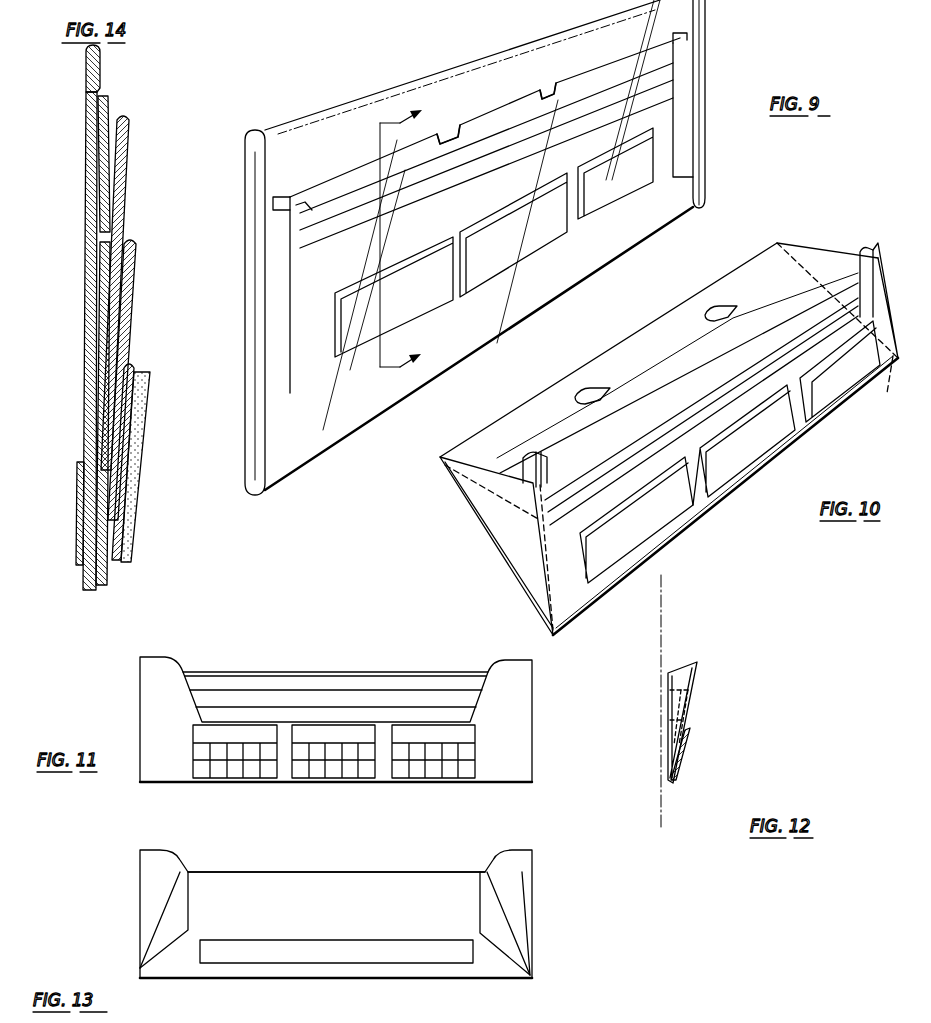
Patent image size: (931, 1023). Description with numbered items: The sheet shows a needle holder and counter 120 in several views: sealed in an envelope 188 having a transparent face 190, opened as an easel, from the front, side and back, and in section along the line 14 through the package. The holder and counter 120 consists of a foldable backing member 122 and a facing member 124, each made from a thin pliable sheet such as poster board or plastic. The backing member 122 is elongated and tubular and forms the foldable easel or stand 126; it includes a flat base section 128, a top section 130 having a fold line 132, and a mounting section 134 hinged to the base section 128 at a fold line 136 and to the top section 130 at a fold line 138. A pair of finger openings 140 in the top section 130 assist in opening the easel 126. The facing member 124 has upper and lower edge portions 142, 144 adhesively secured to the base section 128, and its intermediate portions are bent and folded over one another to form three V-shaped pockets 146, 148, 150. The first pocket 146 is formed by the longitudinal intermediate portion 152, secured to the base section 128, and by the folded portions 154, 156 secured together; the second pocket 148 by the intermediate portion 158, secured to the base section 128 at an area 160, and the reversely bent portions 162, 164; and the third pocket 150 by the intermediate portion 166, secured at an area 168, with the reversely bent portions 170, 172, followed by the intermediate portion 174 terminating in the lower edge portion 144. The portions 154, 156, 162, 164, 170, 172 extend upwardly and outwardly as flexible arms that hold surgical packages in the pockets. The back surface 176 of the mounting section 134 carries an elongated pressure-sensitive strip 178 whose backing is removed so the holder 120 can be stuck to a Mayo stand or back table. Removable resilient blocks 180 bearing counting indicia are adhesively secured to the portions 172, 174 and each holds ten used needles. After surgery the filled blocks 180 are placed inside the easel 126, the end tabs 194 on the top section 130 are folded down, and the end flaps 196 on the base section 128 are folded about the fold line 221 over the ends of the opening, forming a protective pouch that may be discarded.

In FIG. 9, the section line 14— 14 is at (413, 231).
In FIG. 14, the holder and counter 120 is at (148, 512).
In FIG. 9, the holder and counter 120 is at (625, 207).
In FIG. 10, the holder and counter 120 is at (755, 495).
In FIG. 11, the holder and counter 120 is at (336, 719).
In FIG. 13, the holder and counter 120 is at (336, 914).
In FIG. 14, the backing member 122 is at (80, 203).
In FIG. 10, the backing member 122 is at (478, 542).
In FIG. 14, the facing member 124 is at (114, 106).
In FIG. 10, the foldable easel or stand 126 is at (513, 580).
In FIG. 14, the base section 128 is at (98, 345).
In FIG. 10, the base section 128 is at (560, 613).
In FIG. 14, the top section 130 is at (88, 68).
In FIG. 10, the top section 130 is at (510, 420).
In FIG. 14, the fold line 132 is at (101, 50).
In FIG. 9, the fold line 132 is at (612, 64).
In FIG. 10, the fold line 132 is at (657, 350).
In FIG. 14, the mounting section 134 is at (111, 405).
In FIG. 10, the mounting section 134 is at (462, 496).
In FIG. 10, the fold line 136 is at (553, 632).
In FIG. 10, the fold line 138 is at (440, 462).
In FIG. 9, the finger openings 140 is at (452, 140).
In FIG. 10, the finger openings 140 is at (590, 392).
In FIG. 14, the upper edge portion 142 is at (108, 93).
In FIG. 14, the lower edge portion 144 is at (106, 576).
In FIG. 10, the lower edge portion 144 is at (703, 500).
In FIG. 14, the first pocket 146 is at (108, 140).
In FIG. 14, the second pocket 148 is at (104, 245).
In FIG. 14, the third pocket 150 is at (108, 395).
In FIG. 14, the longitudinal intermediate portion 152 is at (100, 172).
In FIG. 14, the longitudinal intermediate portion 154 is at (130, 135).
In FIG. 14, the longitudinal intermediate portion 156 is at (134, 150).
In FIG. 14, the longitudinal intermediate portion 158 is at (100, 292).
In FIG. 14, the securing area 160 is at (100, 323).
In FIG. 14, the longitudinal intermediate portion 162 is at (131, 255).
In FIG. 14, the longitudinal intermediate portion 164 is at (133, 270).
In FIG. 14, the longitudinal intermediate portion 166 is at (104, 368).
In FIG. 14, the securing area 168 is at (100, 440).
In FIG. 14, the longitudinal intermediate portion 170 is at (146, 385).
In FIG. 14, the longitudinal intermediate portion 172 is at (141, 400).
In FIG. 14, the longitudinal intermediate portion 174 is at (103, 495).
In FIG. 14, the back surface 176 is at (82, 510).
In FIG. 13, the back surface 176 is at (482, 957).
In FIG. 14, the pressure-sensitive strip 178 is at (78, 468).
In FIG. 13, the pressure-sensitive strip 178 is at (233, 953).
In FIG. 14, the removable rectangular blocks 180 is at (141, 442).
In FIG. 9, the removable rectangular blocks 180 is at (494, 242).
In FIG. 10, the removable rectangular blocks 180 is at (730, 452).
In FIG. 11, the removable rectangular blocks 180 is at (241, 775).
In FIG. 12, the removable rectangular blocks 180 is at (684, 703).
In FIG. 9, the envelope 188 is at (531, 82).
In FIG. 9, the transparent face 190 is at (706, 190).
In FIG. 9, the end tabs 194 is at (283, 196).
In FIG. 10, the end tabs 194 is at (867, 253).
In FIG. 12, the end tabs 194 is at (678, 680).
In FIG. 10, the end flaps 196 is at (443, 600).
In FIG. 13, the end flaps 196 is at (145, 912).
In FIG. 10, the fold line 221 is at (500, 555).
In FIG. 13, the fold line 221 is at (145, 940).